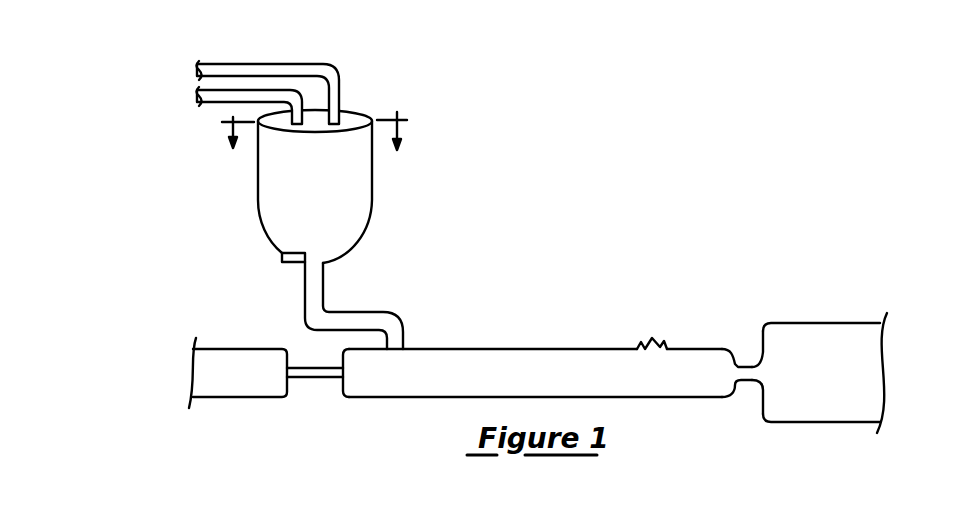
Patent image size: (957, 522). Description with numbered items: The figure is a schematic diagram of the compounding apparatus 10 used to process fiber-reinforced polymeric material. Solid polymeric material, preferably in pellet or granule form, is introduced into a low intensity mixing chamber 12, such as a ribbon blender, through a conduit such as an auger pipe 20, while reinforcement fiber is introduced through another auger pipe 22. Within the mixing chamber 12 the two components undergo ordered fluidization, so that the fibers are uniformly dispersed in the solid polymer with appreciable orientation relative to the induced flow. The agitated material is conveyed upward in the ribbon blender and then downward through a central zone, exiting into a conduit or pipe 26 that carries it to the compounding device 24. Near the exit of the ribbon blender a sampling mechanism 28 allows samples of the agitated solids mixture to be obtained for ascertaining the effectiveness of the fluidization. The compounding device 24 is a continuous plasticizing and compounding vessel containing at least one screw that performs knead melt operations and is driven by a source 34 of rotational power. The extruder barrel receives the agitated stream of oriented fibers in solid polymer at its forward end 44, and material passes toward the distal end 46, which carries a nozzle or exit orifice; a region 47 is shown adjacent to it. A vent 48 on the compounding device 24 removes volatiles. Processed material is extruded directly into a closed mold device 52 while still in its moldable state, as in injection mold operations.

The compounding apparatus 10 is at (714, 180).
The low intensity mixing chamber 12 is at (384, 190).
The auger pipe 20 is at (214, 112).
The auger pipe 22 is at (265, 64).
The compounding device 24 is at (531, 341).
The conduit or pipe 26 is at (362, 312).
The sampling mechanism 28 is at (686, 349).
The source of rotational power 34 is at (244, 344).
The forward end 44 is at (343, 346).
The distal end 46 is at (735, 365).
The valve seat 47 is at (748, 366).
The vent 48 is at (651, 338).
The closed mold device 52 is at (834, 323).